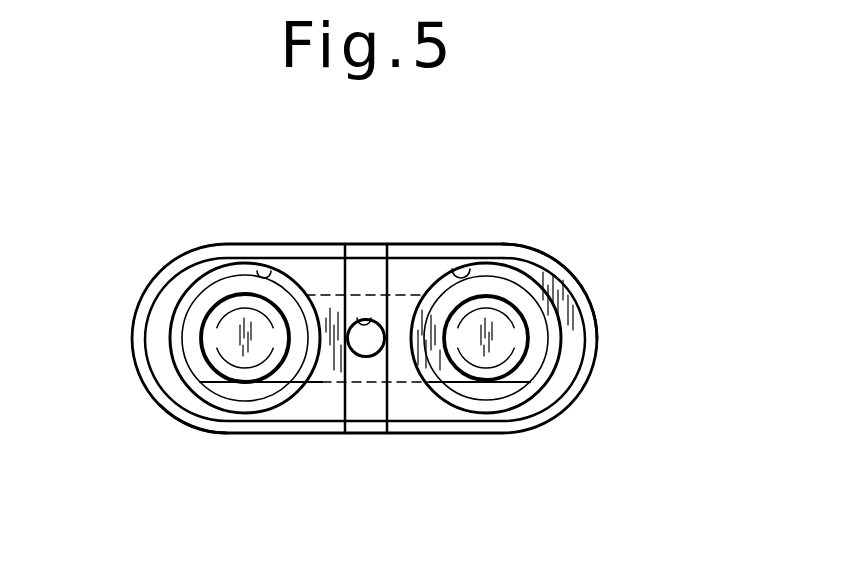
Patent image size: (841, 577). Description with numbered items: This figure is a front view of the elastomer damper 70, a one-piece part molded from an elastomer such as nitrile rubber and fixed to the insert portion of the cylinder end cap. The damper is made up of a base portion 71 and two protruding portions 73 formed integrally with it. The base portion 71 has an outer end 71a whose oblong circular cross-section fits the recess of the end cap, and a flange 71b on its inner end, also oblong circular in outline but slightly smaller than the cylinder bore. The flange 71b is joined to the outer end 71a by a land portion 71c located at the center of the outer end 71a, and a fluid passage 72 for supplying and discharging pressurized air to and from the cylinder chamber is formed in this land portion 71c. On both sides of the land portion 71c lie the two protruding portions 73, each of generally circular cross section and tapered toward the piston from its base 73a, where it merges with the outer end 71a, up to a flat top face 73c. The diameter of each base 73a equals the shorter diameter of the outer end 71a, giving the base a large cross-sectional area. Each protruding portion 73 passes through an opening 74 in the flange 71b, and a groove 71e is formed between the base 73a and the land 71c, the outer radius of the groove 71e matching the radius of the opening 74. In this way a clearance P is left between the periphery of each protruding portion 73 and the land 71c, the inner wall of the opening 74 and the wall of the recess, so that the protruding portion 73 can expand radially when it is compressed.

The elastomer damper 70 is at (602, 241).
The base portion 71 is at (161, 307).
The outer end 71a is at (177, 415).
The flange 71b is at (592, 297).
The land portion 71c is at (355, 372).
The groove 71e is at (303, 363).
The fluid passage 72 is at (357, 318).
The protruding portion 73 is at (266, 372).
The base 73a is at (207, 367).
The top face 73c is at (245, 330).
The opening 74 is at (257, 271).
The clearance P is at (231, 412).